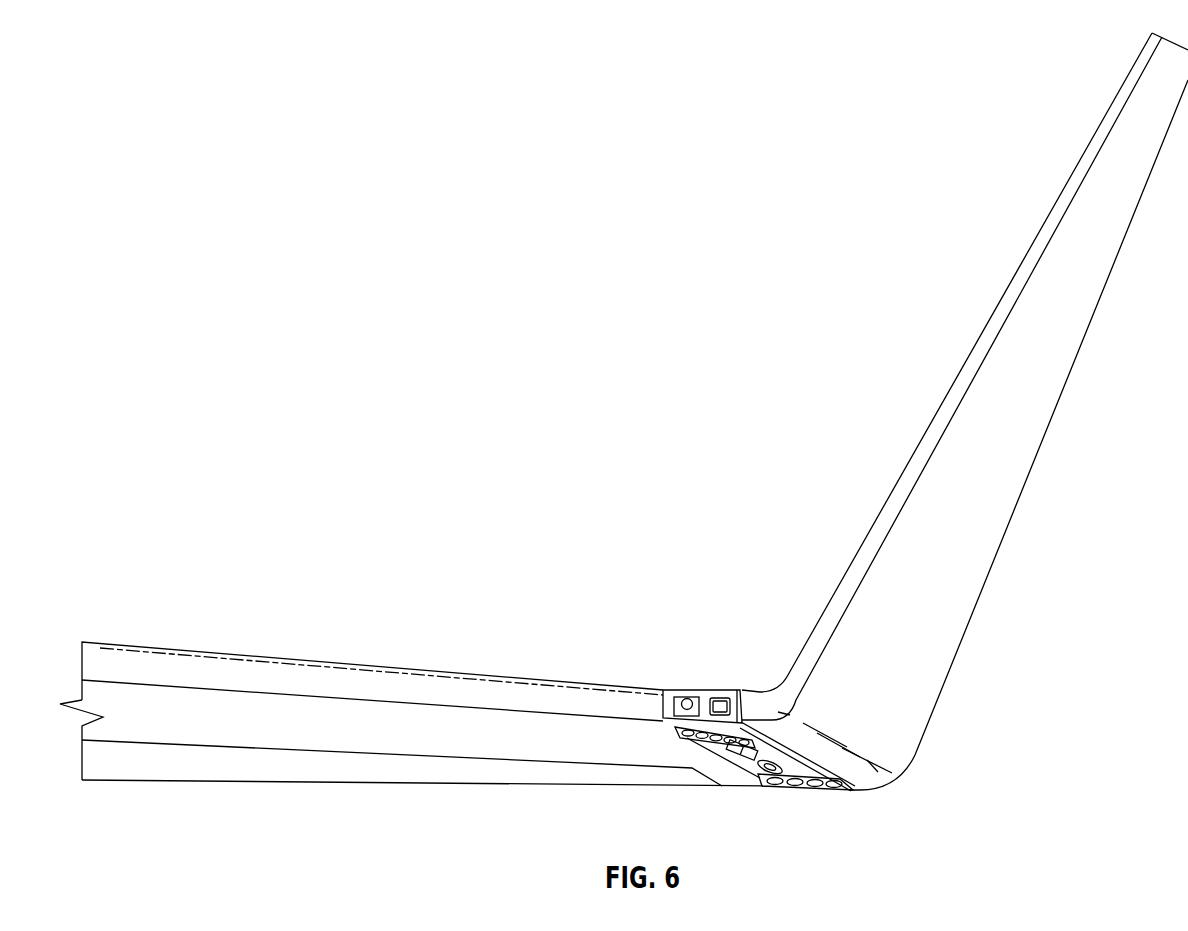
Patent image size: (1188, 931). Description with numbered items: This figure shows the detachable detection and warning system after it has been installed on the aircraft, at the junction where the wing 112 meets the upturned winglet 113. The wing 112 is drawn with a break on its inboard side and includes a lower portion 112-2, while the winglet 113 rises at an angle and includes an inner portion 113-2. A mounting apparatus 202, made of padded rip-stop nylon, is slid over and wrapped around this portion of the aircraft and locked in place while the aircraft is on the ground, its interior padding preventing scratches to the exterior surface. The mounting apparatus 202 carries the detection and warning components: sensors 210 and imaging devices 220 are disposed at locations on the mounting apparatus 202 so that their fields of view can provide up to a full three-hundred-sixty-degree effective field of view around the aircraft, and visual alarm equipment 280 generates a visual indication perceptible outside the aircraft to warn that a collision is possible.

The wing 112 is at (503, 676).
The lower base housing portion 112-2 is at (512, 745).
The winglet 113 is at (1022, 262).
The lid housing portion 113-2 is at (1000, 435).
The mounting apparatus 202 is at (668, 693).
The sensor 210 is at (720, 698).
The imaging device 220 is at (687, 697).
The visual alarm equipment 280 is at (675, 730).